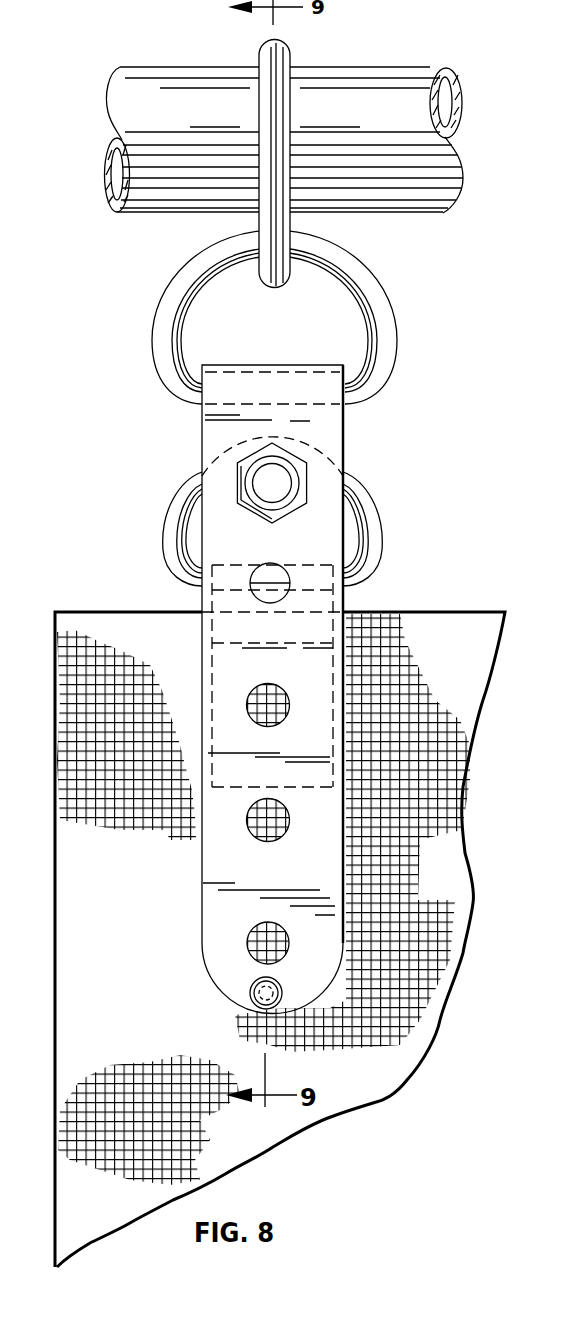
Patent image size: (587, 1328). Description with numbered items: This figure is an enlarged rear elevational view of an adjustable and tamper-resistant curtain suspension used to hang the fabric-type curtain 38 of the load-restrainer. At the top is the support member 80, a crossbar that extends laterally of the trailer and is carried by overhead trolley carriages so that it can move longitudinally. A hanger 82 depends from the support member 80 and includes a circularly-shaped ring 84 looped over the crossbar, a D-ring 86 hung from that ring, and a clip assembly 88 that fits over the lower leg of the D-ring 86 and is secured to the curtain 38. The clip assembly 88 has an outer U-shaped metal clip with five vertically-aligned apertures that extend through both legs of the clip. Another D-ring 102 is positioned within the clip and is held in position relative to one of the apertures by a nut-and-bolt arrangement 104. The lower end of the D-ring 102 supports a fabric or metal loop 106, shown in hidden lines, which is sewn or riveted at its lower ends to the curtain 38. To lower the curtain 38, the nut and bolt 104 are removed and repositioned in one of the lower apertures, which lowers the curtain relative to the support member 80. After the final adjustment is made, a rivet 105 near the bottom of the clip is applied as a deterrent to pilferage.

The curtain 38 is at (160, 757).
The support member 80 is at (407, 68).
The hanger 82 is at (287, 621).
The ring 84 is at (286, 44).
The D-ring 86 is at (378, 288).
The clip assembly 88 is at (180, 427).
The D-ring 102 is at (392, 503).
The nut-and-bolt arrangement 104 is at (295, 465).
The rivet 105 is at (284, 993).
The loop 106 is at (343, 642).